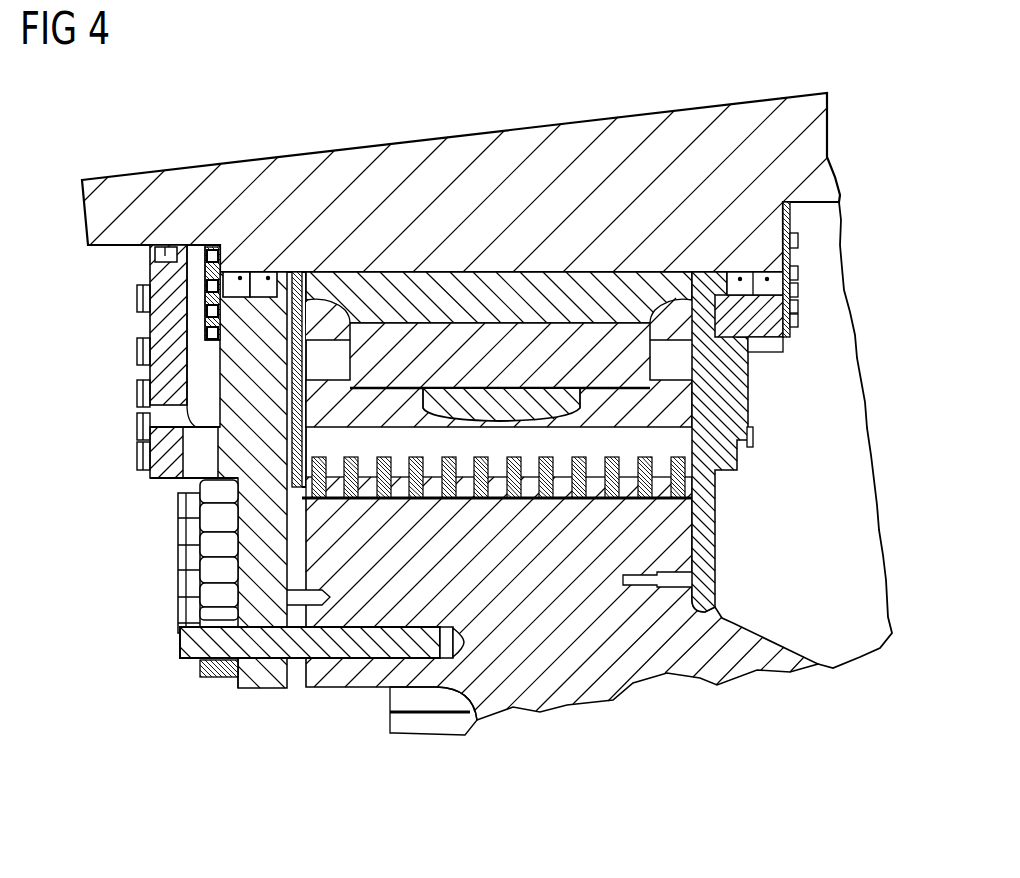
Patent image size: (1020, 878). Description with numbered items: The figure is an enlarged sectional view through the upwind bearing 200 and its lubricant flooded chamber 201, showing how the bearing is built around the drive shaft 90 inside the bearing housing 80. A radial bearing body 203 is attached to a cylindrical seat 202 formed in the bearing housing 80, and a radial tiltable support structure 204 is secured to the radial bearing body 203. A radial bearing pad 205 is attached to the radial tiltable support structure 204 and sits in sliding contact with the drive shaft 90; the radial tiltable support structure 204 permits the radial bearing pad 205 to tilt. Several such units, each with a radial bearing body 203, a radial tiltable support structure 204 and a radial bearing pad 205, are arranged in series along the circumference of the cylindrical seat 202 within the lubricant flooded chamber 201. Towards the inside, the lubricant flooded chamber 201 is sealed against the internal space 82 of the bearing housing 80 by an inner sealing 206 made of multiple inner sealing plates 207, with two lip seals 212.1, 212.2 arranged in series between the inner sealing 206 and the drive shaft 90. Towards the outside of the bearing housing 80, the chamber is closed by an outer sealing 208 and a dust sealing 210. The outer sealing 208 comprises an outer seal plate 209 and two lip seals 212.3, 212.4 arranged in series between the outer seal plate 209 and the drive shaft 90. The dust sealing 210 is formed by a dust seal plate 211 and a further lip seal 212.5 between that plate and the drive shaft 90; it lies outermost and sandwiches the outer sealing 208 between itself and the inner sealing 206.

The bearing housing 80 is at (777, 660).
The internal space 82 is at (853, 410).
The drive shaft 90 is at (400, 165).
The upwind bearing 200 is at (372, 673).
The lubricant flooded chamber 201 is at (330, 307).
The cylindrical seat 202 is at (367, 503).
The radial bearing body 203 is at (528, 455).
The radial tiltable support structure 204 is at (437, 397).
The radial bearing pad 205 is at (520, 307).
The inner sealing 206 is at (781, 442).
The inner sealing plates 207 is at (727, 445).
The outer sealing 208 is at (241, 579).
The outer seal plate 209 is at (163, 470).
The dust sealing 210 is at (129, 361).
The dust seal plate 211 is at (163, 323).
The lip seal 212.1 is at (797, 287).
The lip seal 212.2 is at (750, 287).
The lip seal 212.3 is at (233, 263).
The lip seal 212.4 is at (277, 267).
The lip seal 212.5 is at (157, 250).